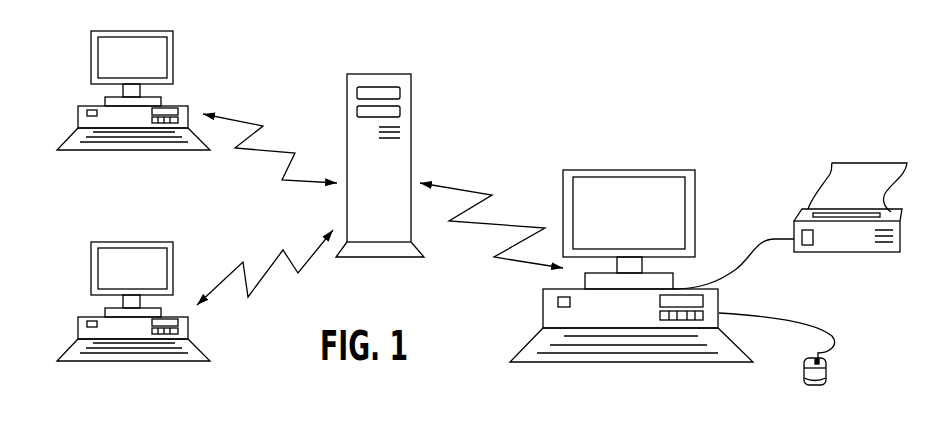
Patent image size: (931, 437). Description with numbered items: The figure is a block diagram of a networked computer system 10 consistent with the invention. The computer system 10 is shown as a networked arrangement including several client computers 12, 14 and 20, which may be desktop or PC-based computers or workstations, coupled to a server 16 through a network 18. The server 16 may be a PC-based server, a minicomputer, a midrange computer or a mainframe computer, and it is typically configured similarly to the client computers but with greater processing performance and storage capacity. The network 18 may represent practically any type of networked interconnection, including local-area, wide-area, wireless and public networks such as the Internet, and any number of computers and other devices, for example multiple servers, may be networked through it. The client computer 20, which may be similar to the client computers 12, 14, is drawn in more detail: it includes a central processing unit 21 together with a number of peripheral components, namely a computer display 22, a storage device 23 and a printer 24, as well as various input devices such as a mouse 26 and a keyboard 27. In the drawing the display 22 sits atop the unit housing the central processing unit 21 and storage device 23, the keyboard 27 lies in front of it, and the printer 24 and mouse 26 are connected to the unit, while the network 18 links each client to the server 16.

The computer system 10 is at (548, 80).
The client computer 12 is at (92, 48).
The client computer 14 is at (91, 243).
The server 16 is at (363, 73).
The network 18 is at (278, 152).
The client computer 20 is at (606, 261).
The central processing unit 21 is at (553, 315).
The computer display 22 is at (600, 172).
The storage device 23 is at (677, 321).
The printer 24 is at (808, 216).
The mouse 26 is at (818, 377).
The keyboard 27 is at (530, 360).